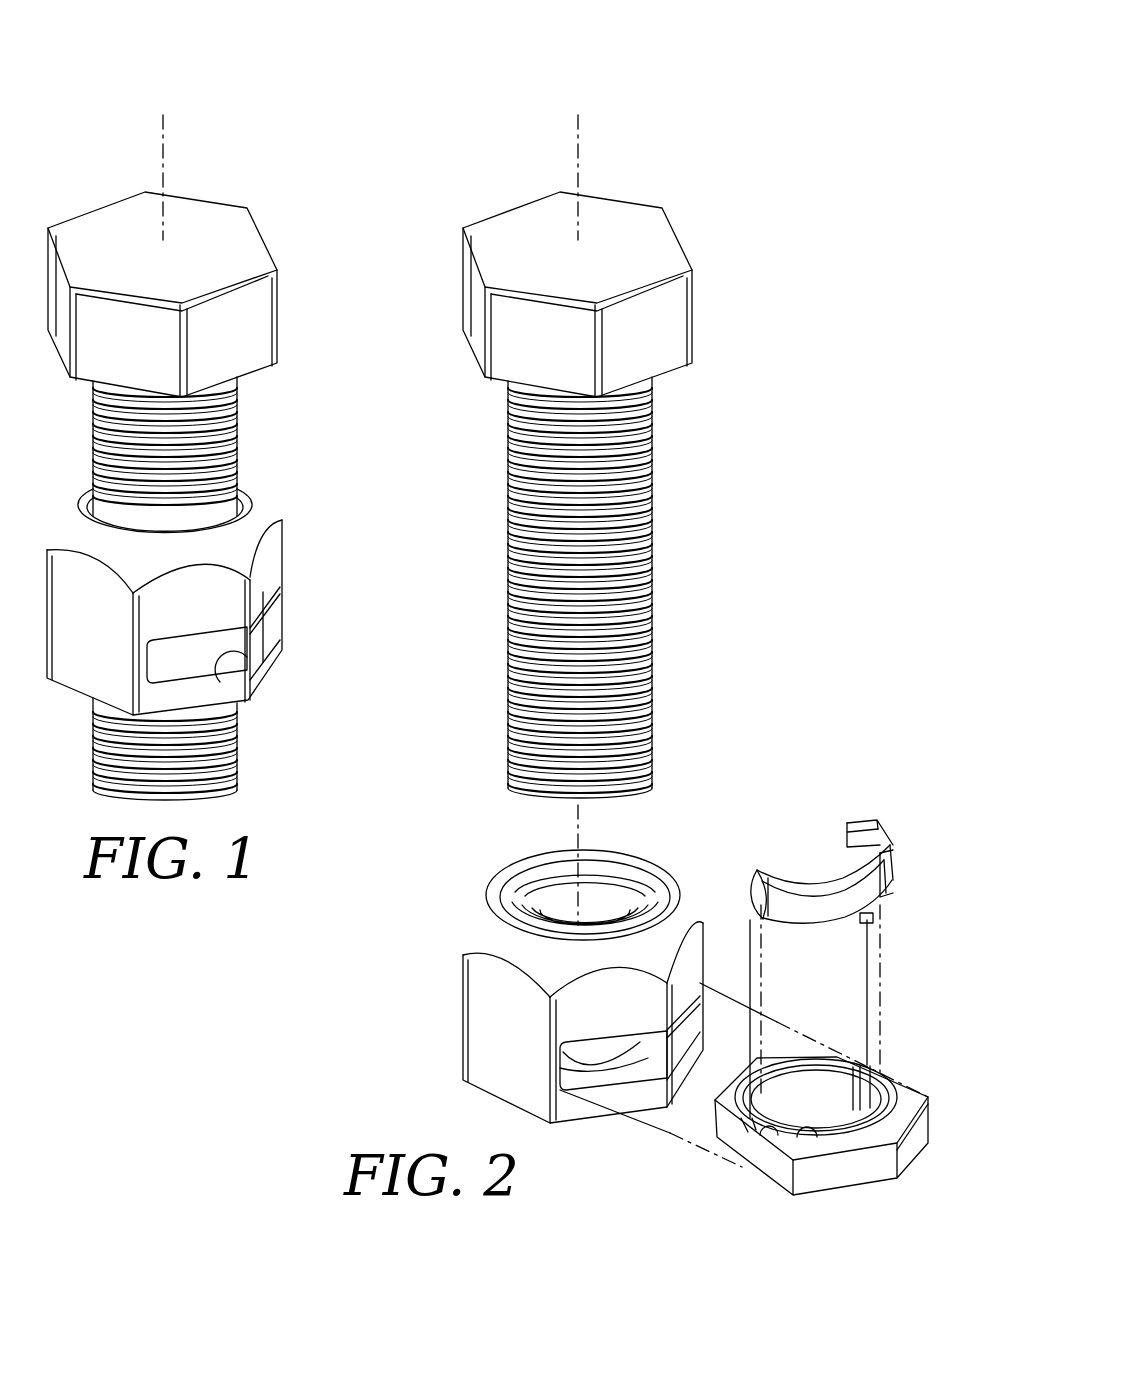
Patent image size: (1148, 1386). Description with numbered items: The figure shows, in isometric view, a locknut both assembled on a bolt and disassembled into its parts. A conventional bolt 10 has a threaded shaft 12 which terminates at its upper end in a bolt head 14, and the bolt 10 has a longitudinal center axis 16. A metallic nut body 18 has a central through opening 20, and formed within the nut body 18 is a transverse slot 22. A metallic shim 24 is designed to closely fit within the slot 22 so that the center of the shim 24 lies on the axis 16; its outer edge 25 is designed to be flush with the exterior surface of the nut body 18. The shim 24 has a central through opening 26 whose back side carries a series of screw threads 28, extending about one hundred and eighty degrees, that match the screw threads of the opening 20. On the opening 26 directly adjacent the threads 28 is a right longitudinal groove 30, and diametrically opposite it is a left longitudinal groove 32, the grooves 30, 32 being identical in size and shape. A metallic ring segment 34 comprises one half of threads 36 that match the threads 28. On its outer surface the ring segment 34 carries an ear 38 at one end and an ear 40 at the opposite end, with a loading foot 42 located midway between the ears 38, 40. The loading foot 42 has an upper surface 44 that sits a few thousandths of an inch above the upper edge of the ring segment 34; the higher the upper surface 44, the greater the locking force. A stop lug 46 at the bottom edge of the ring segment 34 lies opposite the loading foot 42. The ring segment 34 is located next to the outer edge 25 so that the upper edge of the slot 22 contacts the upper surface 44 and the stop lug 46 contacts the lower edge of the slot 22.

In FIG. 1, the bolt 10 is at (87, 173).
In FIG. 2, the bolt 10 is at (502, 173).
In FIG. 1, the threaded shaft 12 is at (223, 433).
In FIG. 2, the threaded shaft 12 is at (638, 433).
In FIG. 1, the bolt head 14 is at (260, 316).
In FIG. 2, the bolt head 14 is at (680, 316).
In FIG. 1, the longitudinal center axis 16 is at (166, 150).
In FIG. 2, the longitudinal center axis 16 is at (581, 150).
In FIG. 1, the nut body 18 is at (285, 530).
In FIG. 2, the nut body 18 is at (463, 1033).
In FIG. 2, the central through opening 20 is at (550, 902).
In FIG. 1, the transverse slot 22 is at (226, 660).
In FIG. 2, the transverse slot 22 is at (633, 1070).
In FIG. 1, the shim 24 is at (278, 609).
In FIG. 2, the shim 24 is at (908, 1082).
In FIG. 1, the outer edge 25 is at (262, 630).
In FIG. 2, the outer edge 25 is at (912, 1147).
In FIG. 2, the central through opening 26 is at (810, 1135).
In FIG. 2, the screw threads 28 is at (812, 1088).
In FIG. 2, the right longitudinal groove 30 is at (873, 1107).
In FIG. 2, the left longitudinal groove 32 is at (747, 1133).
In FIG. 2, the ring segment 34 is at (890, 836).
In FIG. 2, the threads 36 is at (847, 850).
In FIG. 2, the ear 38 is at (860, 820).
In FIG. 2, the ear 40 is at (750, 903).
In FIG. 2, the loading foot 42 is at (878, 900).
In FIG. 2, the upper surface 44 is at (895, 853).
In FIG. 2, the stop lug 46 is at (860, 920).